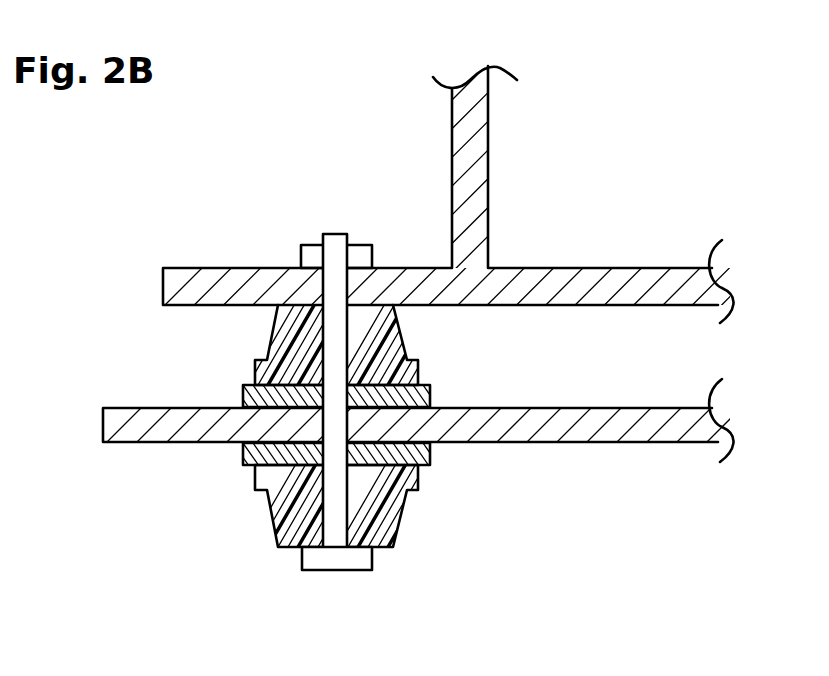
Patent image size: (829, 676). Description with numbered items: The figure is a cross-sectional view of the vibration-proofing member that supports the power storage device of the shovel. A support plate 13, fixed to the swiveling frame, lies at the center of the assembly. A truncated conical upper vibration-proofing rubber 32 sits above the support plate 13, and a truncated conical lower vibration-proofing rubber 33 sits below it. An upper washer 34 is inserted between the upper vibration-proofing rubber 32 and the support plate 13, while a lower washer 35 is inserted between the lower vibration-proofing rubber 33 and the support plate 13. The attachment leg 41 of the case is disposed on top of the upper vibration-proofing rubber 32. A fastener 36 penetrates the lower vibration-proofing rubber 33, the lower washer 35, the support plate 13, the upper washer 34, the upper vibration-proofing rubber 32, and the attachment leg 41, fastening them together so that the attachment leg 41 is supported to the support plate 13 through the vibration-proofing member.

The attachment leg 41 is at (163, 268).
The support plate 13 is at (102, 418).
The upper vibration-proofing rubber 32 is at (271, 340).
The lower vibration-proofing rubber 33 is at (270, 510).
The upper washer 34 is at (243, 385).
The lower washer 35 is at (243, 466).
The fastener 36 is at (300, 572).